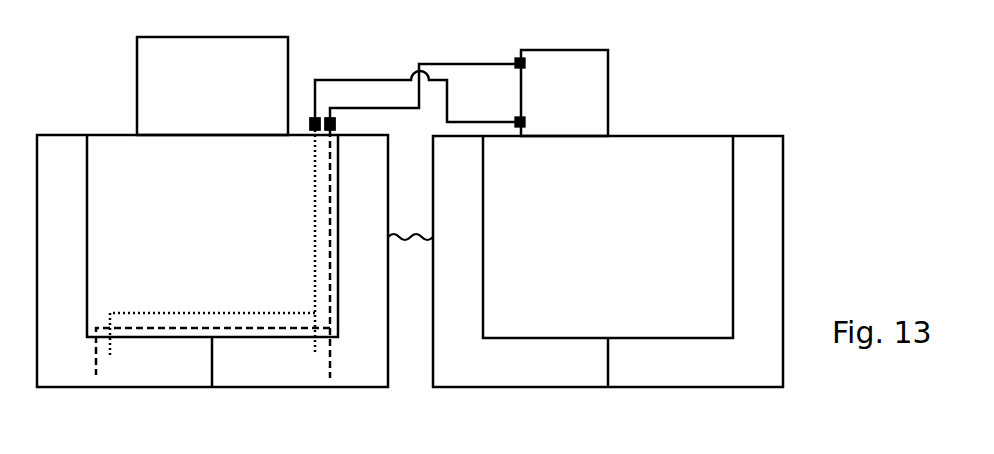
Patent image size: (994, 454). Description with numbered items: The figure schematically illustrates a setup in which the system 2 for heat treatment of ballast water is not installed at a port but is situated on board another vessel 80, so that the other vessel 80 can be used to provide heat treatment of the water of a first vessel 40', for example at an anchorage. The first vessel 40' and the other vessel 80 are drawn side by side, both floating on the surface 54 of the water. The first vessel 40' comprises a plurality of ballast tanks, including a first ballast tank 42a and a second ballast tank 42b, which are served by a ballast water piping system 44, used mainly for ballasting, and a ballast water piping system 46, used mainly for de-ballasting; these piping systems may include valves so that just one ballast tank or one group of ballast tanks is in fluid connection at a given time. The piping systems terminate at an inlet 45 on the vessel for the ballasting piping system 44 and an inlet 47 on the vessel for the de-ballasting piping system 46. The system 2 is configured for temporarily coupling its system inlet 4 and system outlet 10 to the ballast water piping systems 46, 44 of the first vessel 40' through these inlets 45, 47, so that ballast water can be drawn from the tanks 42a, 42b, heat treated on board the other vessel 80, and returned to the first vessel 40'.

The vessel 40' is at (207, 212).
The other vessel 80 is at (668, 70).
The system for heat treatment of ballast water 2 is at (573, 104).
The surface of the water 54 is at (424, 242).
The system outlet 10 is at (313, 118).
The inlet on the vessel for ballast water piping system 45 is at (310, 122).
The system inlet 4 is at (334, 117).
The inlet on the vessel for ballast water piping system 47 is at (328, 117).
The ballast water piping system 44 is at (314, 168).
The ballast water piping system 46 is at (329, 212).
The first ballast tank 42a is at (381, 376).
The second ballast tank 42b is at (86, 374).